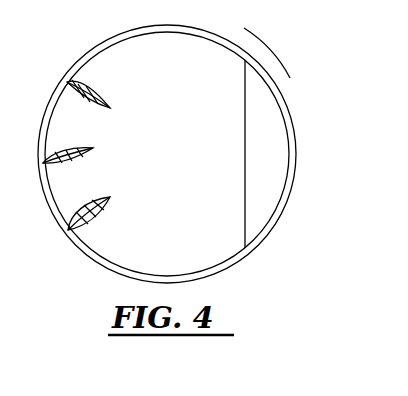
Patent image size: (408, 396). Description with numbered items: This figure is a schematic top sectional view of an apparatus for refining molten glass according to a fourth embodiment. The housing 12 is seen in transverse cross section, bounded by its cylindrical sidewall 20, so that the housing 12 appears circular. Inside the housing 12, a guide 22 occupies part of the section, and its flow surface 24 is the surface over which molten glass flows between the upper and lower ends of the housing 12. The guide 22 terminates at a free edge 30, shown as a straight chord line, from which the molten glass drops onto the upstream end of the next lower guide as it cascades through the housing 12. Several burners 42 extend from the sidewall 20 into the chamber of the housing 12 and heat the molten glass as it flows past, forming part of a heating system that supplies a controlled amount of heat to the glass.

The housing 12 is at (264, 241).
The sidewall 20 is at (93, 50).
The guide 22 is at (240, 52).
The flow surface 24 is at (176, 161).
The free edge 30 is at (246, 158).
The burner 42 is at (86, 107).